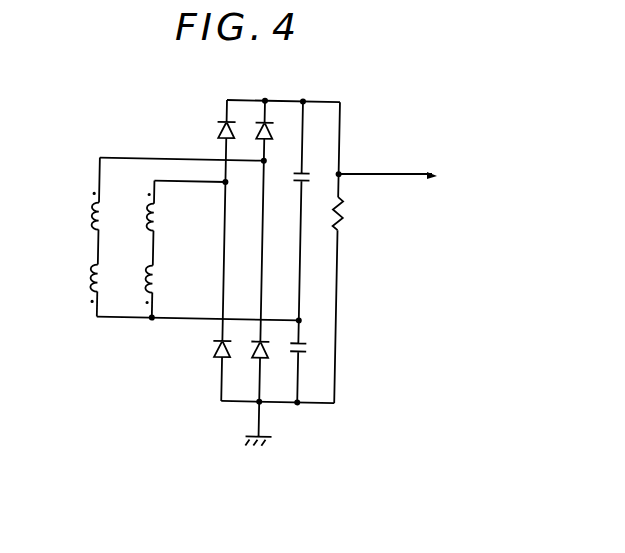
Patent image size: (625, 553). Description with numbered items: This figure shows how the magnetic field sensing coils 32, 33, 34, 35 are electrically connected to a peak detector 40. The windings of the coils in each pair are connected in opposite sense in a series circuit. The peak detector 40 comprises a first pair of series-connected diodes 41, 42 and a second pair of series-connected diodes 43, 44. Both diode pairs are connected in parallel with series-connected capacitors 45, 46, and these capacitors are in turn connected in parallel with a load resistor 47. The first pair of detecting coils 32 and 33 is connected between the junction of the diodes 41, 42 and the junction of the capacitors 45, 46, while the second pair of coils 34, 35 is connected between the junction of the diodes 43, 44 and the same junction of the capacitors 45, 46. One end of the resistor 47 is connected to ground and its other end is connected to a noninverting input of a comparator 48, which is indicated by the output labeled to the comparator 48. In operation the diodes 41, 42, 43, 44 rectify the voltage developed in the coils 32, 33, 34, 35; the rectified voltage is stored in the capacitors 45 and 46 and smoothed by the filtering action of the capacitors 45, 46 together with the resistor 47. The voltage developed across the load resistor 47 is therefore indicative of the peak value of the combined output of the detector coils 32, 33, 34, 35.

The peak detector 40 is at (298, 81).
The detecting coil 32 is at (163, 220).
The detecting coil 33 is at (164, 285).
The detecting coil 34 is at (92, 219).
The detecting coil 35 is at (92, 287).
The diode 41 is at (218, 131).
The diode 42 is at (216, 356).
The diode 43 is at (274, 129).
The diode 44 is at (256, 356).
The capacitor 45 is at (312, 178).
The capacitor 46 is at (312, 354).
The load resistor 47 is at (349, 212).
The comparator 48 is at (455, 181).